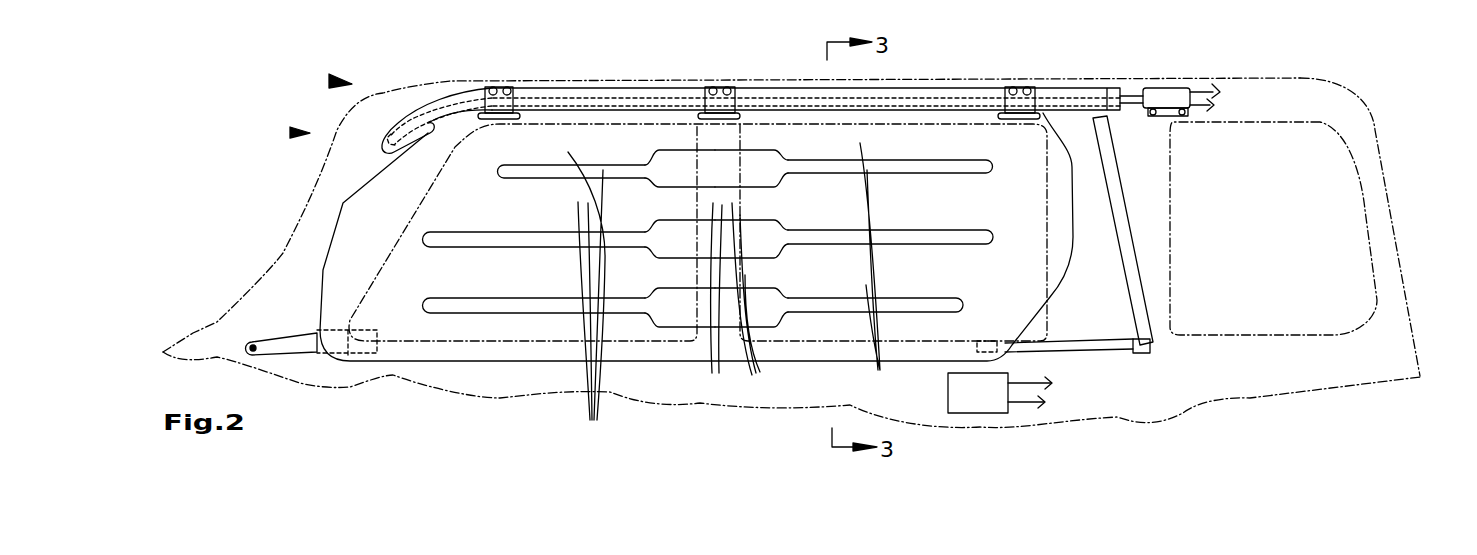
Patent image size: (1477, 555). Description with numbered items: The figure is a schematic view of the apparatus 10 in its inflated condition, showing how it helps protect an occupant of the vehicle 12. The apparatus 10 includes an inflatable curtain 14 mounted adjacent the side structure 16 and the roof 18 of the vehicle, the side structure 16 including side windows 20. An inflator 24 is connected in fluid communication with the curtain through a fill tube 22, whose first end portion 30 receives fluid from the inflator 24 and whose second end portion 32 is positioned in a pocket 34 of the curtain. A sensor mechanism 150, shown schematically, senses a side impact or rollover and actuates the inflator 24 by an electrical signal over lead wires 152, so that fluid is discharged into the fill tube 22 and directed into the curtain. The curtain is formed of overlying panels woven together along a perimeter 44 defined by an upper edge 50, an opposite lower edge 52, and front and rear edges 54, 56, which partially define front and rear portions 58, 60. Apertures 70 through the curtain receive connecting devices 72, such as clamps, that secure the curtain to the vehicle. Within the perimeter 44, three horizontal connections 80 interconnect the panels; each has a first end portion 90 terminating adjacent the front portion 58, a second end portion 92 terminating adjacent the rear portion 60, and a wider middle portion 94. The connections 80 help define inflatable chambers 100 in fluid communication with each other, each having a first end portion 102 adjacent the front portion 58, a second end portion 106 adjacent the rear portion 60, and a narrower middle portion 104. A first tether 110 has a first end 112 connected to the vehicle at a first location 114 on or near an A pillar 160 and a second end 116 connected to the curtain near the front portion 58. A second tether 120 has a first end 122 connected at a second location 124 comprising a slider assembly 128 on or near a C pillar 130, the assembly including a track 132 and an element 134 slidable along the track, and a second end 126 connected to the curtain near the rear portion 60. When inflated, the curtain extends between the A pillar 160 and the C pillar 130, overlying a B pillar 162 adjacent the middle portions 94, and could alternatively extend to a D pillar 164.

The apparatus 10 is at (332, 80).
The vehicle 12 is at (292, 132).
The inflatable curtain 14 is at (490, 326).
The side structure 16 is at (467, 345).
The roof 18 is at (1300, 73).
The side windows 20 is at (410, 376).
The fill tube 22 is at (1130, 95).
The inflator 24 is at (1168, 92).
The first end portion 30 is at (1133, 93).
The second end portion 32 is at (415, 113).
The pocket 34 is at (395, 122).
The perimeter 44 is at (553, 350).
The upper edge 50 is at (730, 136).
The lower edge 52 is at (652, 362).
The front edge 54 is at (323, 278).
The rear edge 56 is at (1073, 238).
The front portion 58 is at (383, 242).
The rear portion 60 is at (1027, 210).
The apertures 70 is at (480, 114).
The connecting devices 72 is at (500, 90).
The connection 80 is at (670, 238).
The first end portion 90 is at (513, 178).
The second end portion 92 is at (897, 178).
The middle portion 94 is at (762, 238).
The inflatable chambers 100 is at (742, 134).
The first end portion 102 is at (588, 303).
The middle portion 104 is at (717, 136).
The second end portion 106 is at (878, 267).
The first tether 110 is at (297, 343).
The first end 112 is at (257, 343).
The first location 114 is at (247, 348).
The second end 116 is at (350, 362).
The second tether 120 is at (1063, 350).
The first end 122 is at (1120, 348).
The second location 124 is at (1137, 348).
The second end 126 is at (982, 337).
The slider assembly 128 is at (1130, 252).
The C pillar 130 is at (1133, 167).
The track 132 is at (1130, 273).
The element 134 is at (1150, 346).
The sensor mechanism 150 is at (968, 398).
The lead wires 152 is at (1210, 88).
The A pillar 160 is at (310, 240).
The B pillar 162 is at (717, 173).
The D pillar 164 is at (1385, 207).